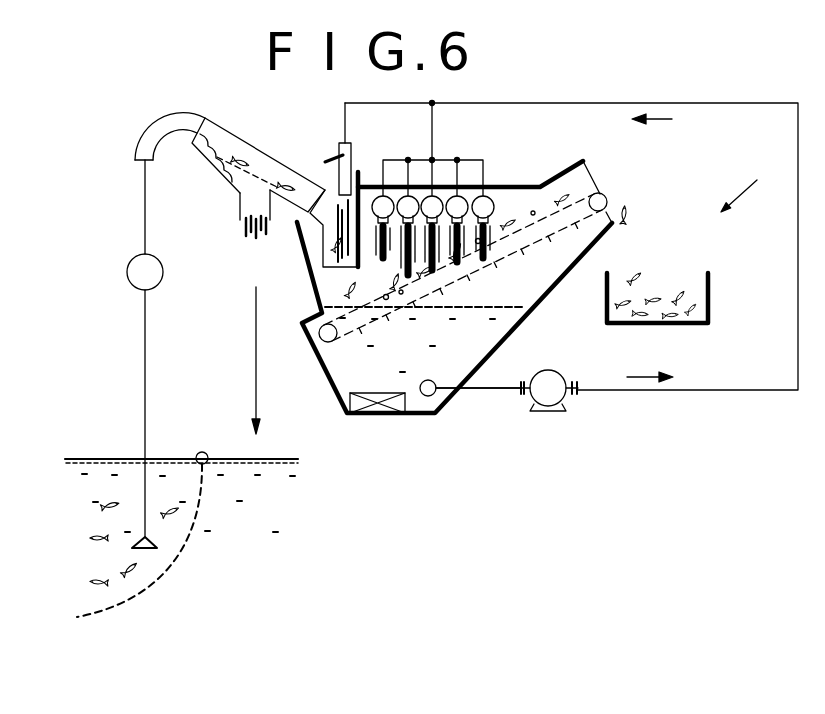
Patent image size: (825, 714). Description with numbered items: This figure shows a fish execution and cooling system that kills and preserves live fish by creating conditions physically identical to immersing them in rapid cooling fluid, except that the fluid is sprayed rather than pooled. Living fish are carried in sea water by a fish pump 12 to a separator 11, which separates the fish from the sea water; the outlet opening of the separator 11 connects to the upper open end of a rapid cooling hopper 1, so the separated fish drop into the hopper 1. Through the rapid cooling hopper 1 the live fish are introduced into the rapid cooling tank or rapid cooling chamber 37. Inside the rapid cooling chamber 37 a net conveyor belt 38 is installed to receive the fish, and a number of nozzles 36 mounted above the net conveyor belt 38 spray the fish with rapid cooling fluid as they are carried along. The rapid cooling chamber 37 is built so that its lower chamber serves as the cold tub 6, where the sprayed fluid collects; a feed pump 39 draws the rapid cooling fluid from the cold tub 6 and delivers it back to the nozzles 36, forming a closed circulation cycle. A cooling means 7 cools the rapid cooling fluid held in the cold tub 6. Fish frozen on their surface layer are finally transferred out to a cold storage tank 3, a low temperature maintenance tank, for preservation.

The rapid cooling hopper 1 is at (335, 188).
The cold storage tank 3 is at (712, 295).
The cold tub 6 is at (462, 369).
The cooling means 7 is at (380, 414).
The separator 11 is at (247, 141).
The fish pump 12 is at (158, 278).
The nozzles 36 is at (487, 200).
The rapid cooling chamber 37 is at (398, 238).
The net conveyor belt 38 is at (512, 258).
The feed pump 39 is at (565, 402).